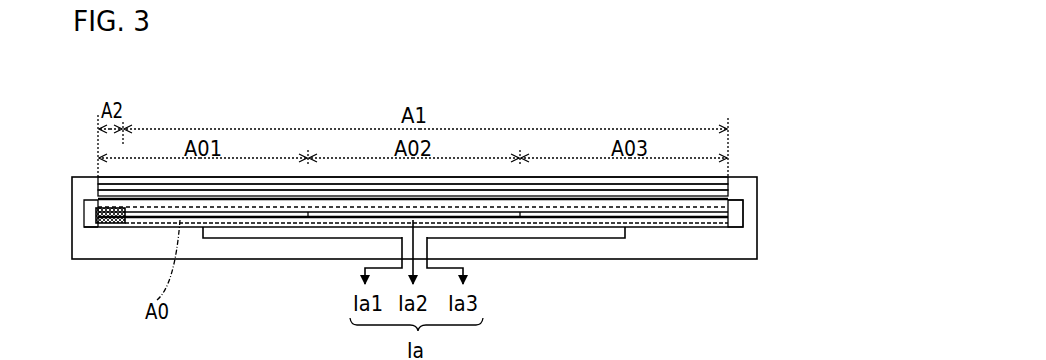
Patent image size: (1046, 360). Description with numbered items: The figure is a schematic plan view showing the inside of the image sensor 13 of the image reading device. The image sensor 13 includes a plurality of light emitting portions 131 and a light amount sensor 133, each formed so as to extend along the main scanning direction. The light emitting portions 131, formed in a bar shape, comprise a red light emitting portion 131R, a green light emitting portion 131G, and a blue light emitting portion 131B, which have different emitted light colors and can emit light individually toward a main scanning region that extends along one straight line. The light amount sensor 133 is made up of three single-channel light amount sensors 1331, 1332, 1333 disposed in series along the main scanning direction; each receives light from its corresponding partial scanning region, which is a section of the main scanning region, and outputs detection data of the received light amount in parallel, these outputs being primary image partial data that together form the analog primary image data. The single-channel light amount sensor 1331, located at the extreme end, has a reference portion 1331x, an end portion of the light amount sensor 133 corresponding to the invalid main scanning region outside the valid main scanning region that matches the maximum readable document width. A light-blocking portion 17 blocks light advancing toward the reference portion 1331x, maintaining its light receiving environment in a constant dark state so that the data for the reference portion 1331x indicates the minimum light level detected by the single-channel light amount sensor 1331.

The image sensor 13 is at (404, 185).
The light emitting portions 131 is at (479, 158).
The blue light emitting portion 131B is at (731, 181).
The green light emitting portion 131G is at (731, 187).
The red light emitting portion 131R is at (731, 194).
The light amount sensor 133 is at (735, 216).
The light-blocking portion 17 is at (112, 228).
The single-channel light amount sensor 1331 is at (170, 224).
The reference portion 1331x is at (90, 227).
The single-channel light amount sensor 1332 is at (487, 221).
The single-channel light amount sensor 1333 is at (665, 228).